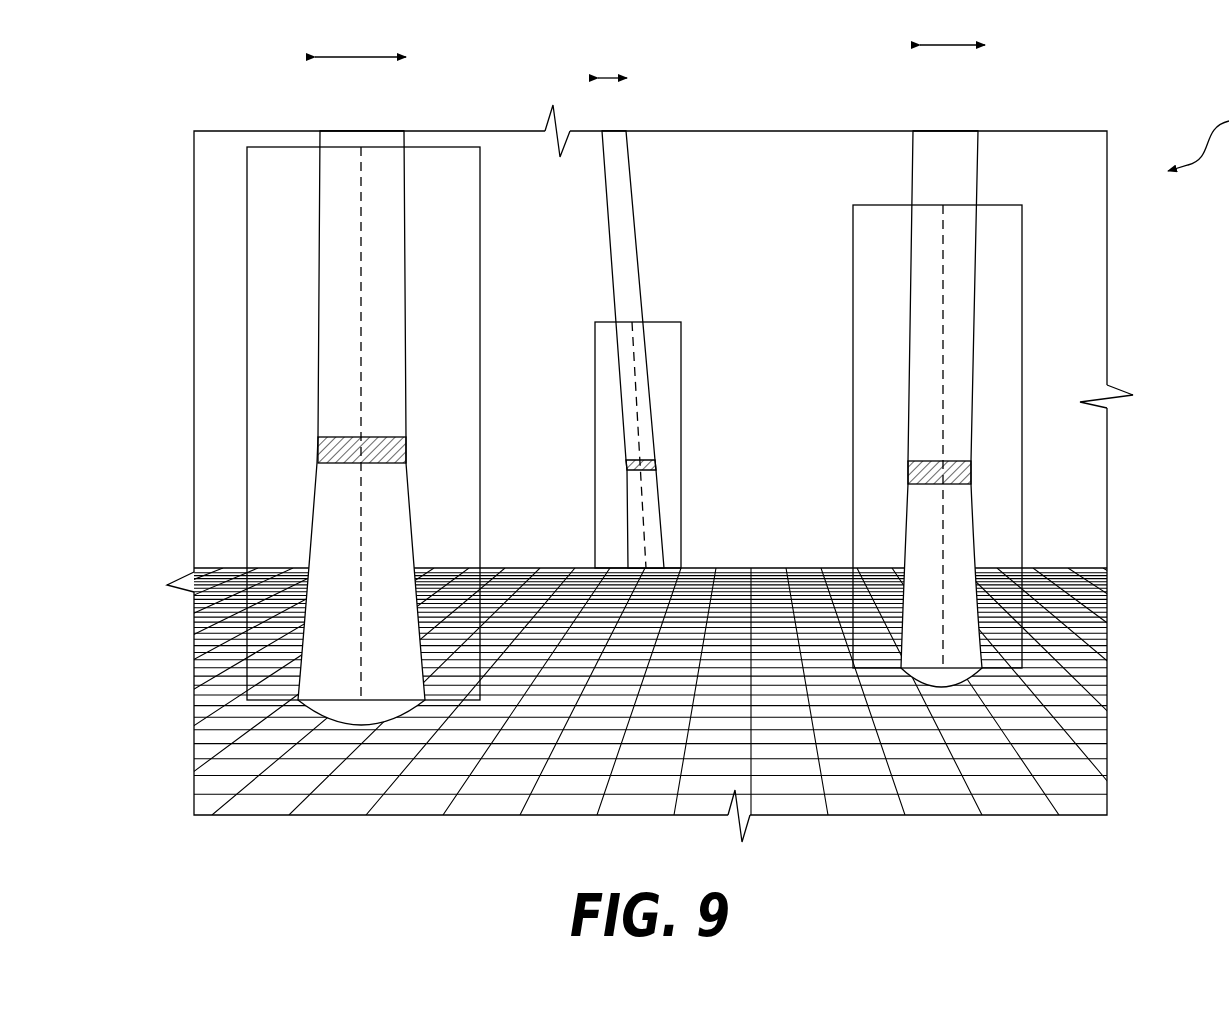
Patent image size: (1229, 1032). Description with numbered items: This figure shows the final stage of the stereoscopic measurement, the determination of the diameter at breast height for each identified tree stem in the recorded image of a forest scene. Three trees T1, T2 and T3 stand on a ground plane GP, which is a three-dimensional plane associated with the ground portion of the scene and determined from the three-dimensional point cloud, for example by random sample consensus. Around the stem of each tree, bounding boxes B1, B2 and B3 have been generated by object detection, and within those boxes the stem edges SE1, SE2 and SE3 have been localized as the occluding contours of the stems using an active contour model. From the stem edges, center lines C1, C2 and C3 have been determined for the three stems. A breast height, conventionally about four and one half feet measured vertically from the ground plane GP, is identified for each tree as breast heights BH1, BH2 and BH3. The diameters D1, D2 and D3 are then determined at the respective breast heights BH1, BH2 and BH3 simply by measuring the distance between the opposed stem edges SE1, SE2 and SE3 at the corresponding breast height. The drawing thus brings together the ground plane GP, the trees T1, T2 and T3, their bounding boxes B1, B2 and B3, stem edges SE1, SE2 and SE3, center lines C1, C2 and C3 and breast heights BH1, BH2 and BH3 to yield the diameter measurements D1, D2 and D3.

The bounding box B1 is at (247, 375).
The bounding box B2 is at (853, 420).
The bounding box B3 is at (682, 380).
The center line C1 is at (360, 266).
The center line C2 is at (943, 272).
The center line C3 is at (634, 360).
The tree T1 is at (375, 135).
The tree T2 is at (953, 150).
The tree T3 is at (618, 170).
The diameter D1 is at (360, 43).
The diameter D2 is at (952, 30).
The diameter D3 is at (613, 61).
The breast height BH1 is at (320, 437).
The breast height BH2 is at (972, 470).
The breast height BH3 is at (628, 468).
The stem edges SE1 is at (310, 548).
The stem edges SE2 is at (905, 548).
The stem edges SE3 is at (628, 512).
The ground plane GP is at (1105, 652).